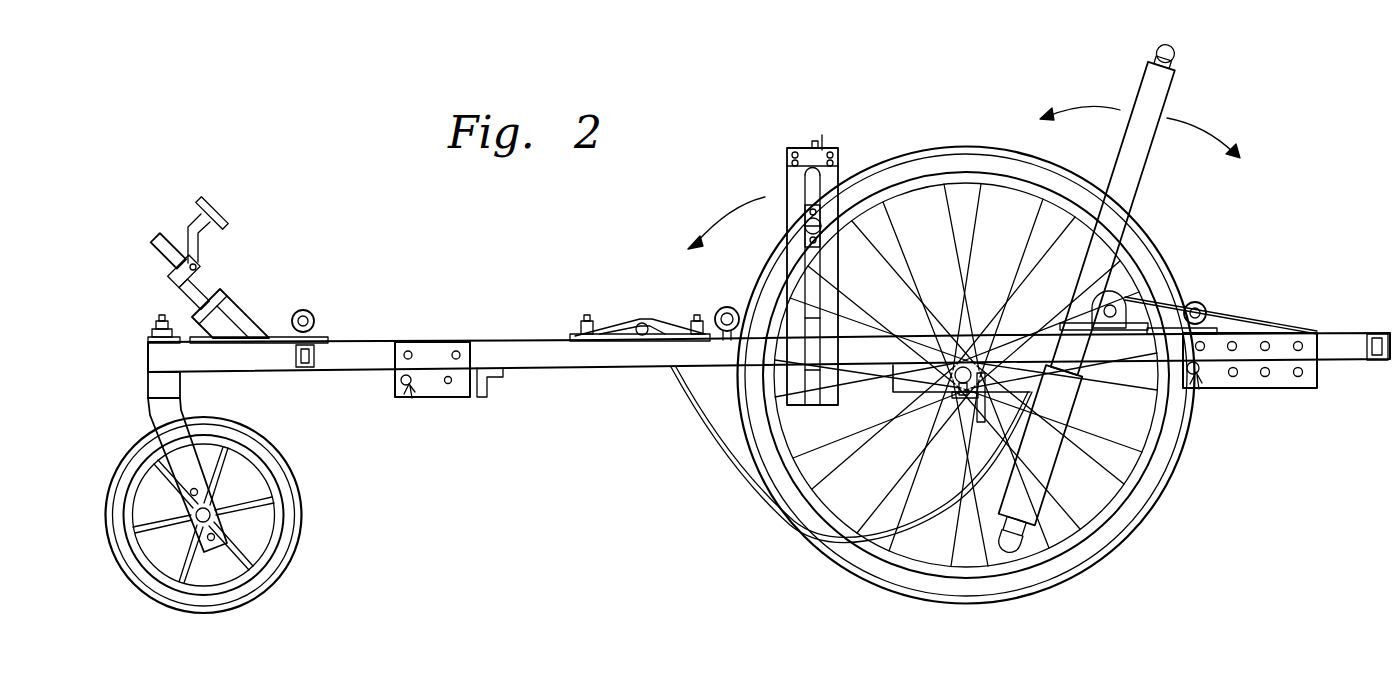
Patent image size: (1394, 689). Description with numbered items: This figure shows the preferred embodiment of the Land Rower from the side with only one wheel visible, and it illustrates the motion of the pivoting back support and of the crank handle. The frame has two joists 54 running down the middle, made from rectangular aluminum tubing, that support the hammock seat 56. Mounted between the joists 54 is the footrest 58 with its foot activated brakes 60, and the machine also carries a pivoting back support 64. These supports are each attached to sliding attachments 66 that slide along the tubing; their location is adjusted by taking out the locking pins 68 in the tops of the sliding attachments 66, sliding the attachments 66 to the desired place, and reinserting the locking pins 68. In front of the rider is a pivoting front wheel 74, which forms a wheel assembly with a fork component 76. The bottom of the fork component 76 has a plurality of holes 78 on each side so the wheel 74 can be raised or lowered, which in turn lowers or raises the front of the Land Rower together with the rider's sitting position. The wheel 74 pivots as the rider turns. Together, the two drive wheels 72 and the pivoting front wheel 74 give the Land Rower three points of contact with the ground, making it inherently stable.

The joists 54 is at (543, 360).
The hammock seat 56 is at (712, 434).
The footrest 58 is at (243, 307).
The foot activated brakes 60 is at (214, 205).
The pivoting back support 64 is at (1173, 45).
The sliding attachments 66 is at (320, 333).
The locking pins 68 is at (306, 309).
The drive wheels 72 is at (898, 152).
The front wheel 74 is at (142, 572).
The fork component 76 is at (152, 409).
The holes 78 is at (198, 488).